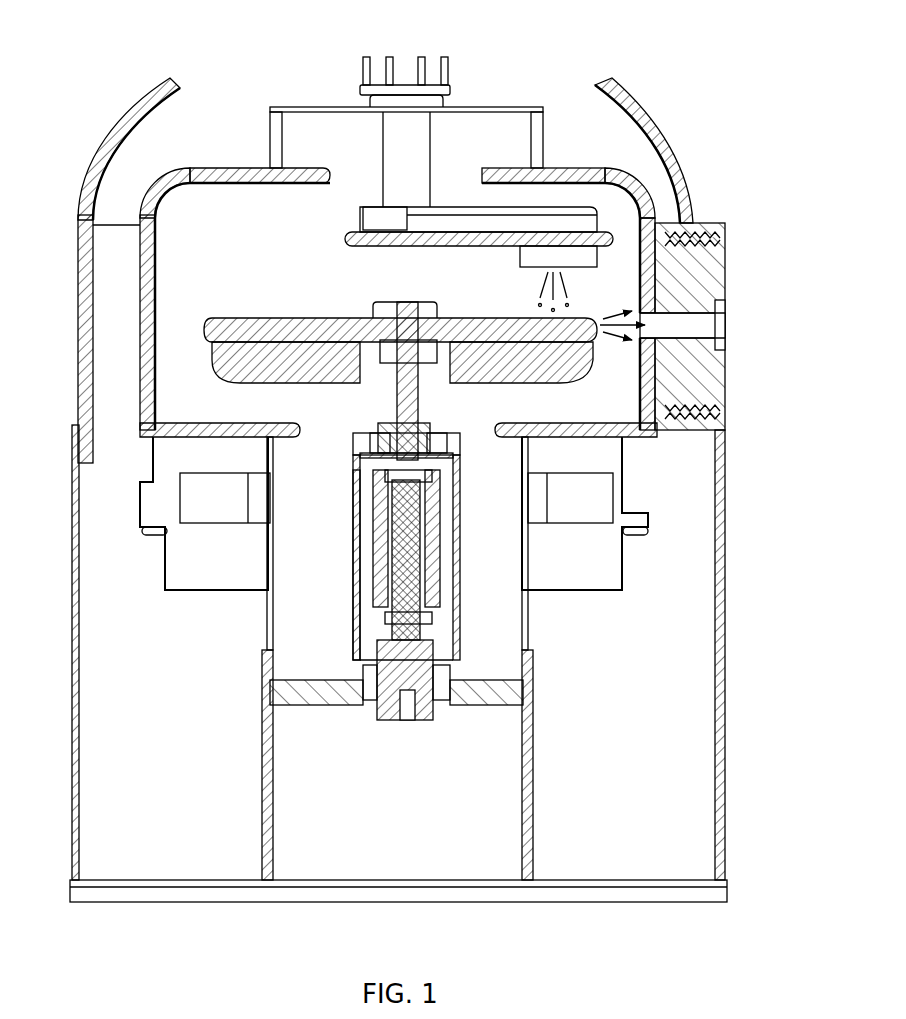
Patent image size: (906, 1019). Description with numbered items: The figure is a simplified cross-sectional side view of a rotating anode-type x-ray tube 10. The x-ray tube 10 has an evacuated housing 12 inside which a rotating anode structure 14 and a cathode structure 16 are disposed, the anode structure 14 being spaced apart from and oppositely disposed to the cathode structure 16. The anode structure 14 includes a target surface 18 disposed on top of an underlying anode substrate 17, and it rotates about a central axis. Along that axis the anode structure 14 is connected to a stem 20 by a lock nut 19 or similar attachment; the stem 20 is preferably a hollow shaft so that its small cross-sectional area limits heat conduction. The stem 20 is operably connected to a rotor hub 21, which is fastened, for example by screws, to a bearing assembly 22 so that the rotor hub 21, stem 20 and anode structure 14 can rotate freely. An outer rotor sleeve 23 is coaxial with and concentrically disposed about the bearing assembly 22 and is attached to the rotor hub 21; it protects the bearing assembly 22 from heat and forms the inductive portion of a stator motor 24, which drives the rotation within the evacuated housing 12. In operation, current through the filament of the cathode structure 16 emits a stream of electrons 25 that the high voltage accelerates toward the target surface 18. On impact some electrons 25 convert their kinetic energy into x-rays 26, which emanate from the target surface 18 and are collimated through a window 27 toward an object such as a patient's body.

The x-ray tube 10 is at (82, 150).
The evacuated housing 12 is at (240, 165).
The rotating anode structure 14 is at (503, 310).
The cathode structure 16 is at (510, 249).
The anode substrate 17 is at (235, 365).
The target surface 18 is at (258, 318).
The lock nut 19 is at (380, 302).
The stem 20 is at (386, 392).
The rotor hub 21 is at (463, 445).
The bearing assembly 22 is at (462, 602).
The outer rotor sleeve 23 is at (352, 590).
The stator motor 24 is at (163, 555).
The stream of electrons 25 is at (580, 290).
The x-rays 26 is at (603, 336).
The window 27 is at (727, 318).